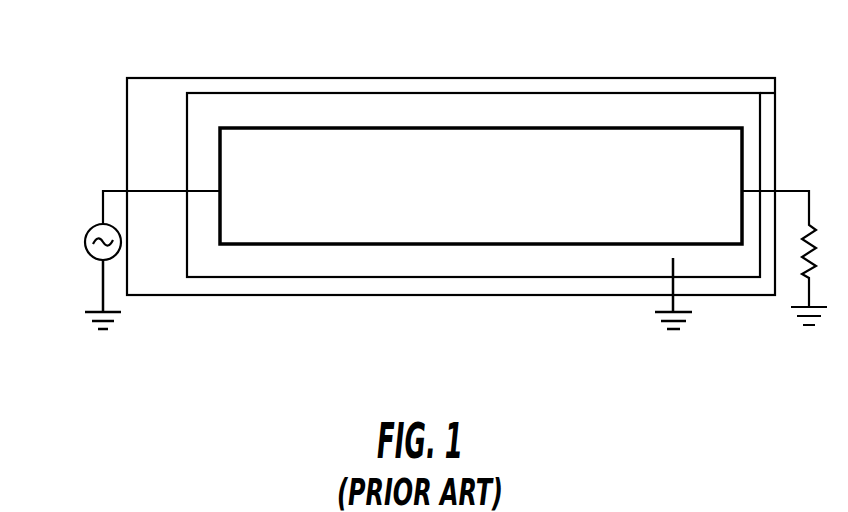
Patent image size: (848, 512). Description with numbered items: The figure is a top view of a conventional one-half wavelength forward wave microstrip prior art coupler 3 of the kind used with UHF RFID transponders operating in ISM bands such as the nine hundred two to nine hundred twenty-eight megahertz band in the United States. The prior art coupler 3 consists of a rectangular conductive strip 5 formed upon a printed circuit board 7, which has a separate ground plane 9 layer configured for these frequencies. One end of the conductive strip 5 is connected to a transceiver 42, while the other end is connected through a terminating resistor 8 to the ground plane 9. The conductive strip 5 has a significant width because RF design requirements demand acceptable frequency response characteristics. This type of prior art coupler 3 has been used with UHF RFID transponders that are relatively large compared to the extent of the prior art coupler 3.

The prior art coupler 3 is at (302, 77).
The conductive strip 5 is at (435, 153).
The printed circuit board 7 is at (778, 95).
The terminating resistor 8 is at (792, 258).
The ground plane 9 is at (652, 107).
The transceiver 42 is at (87, 232).